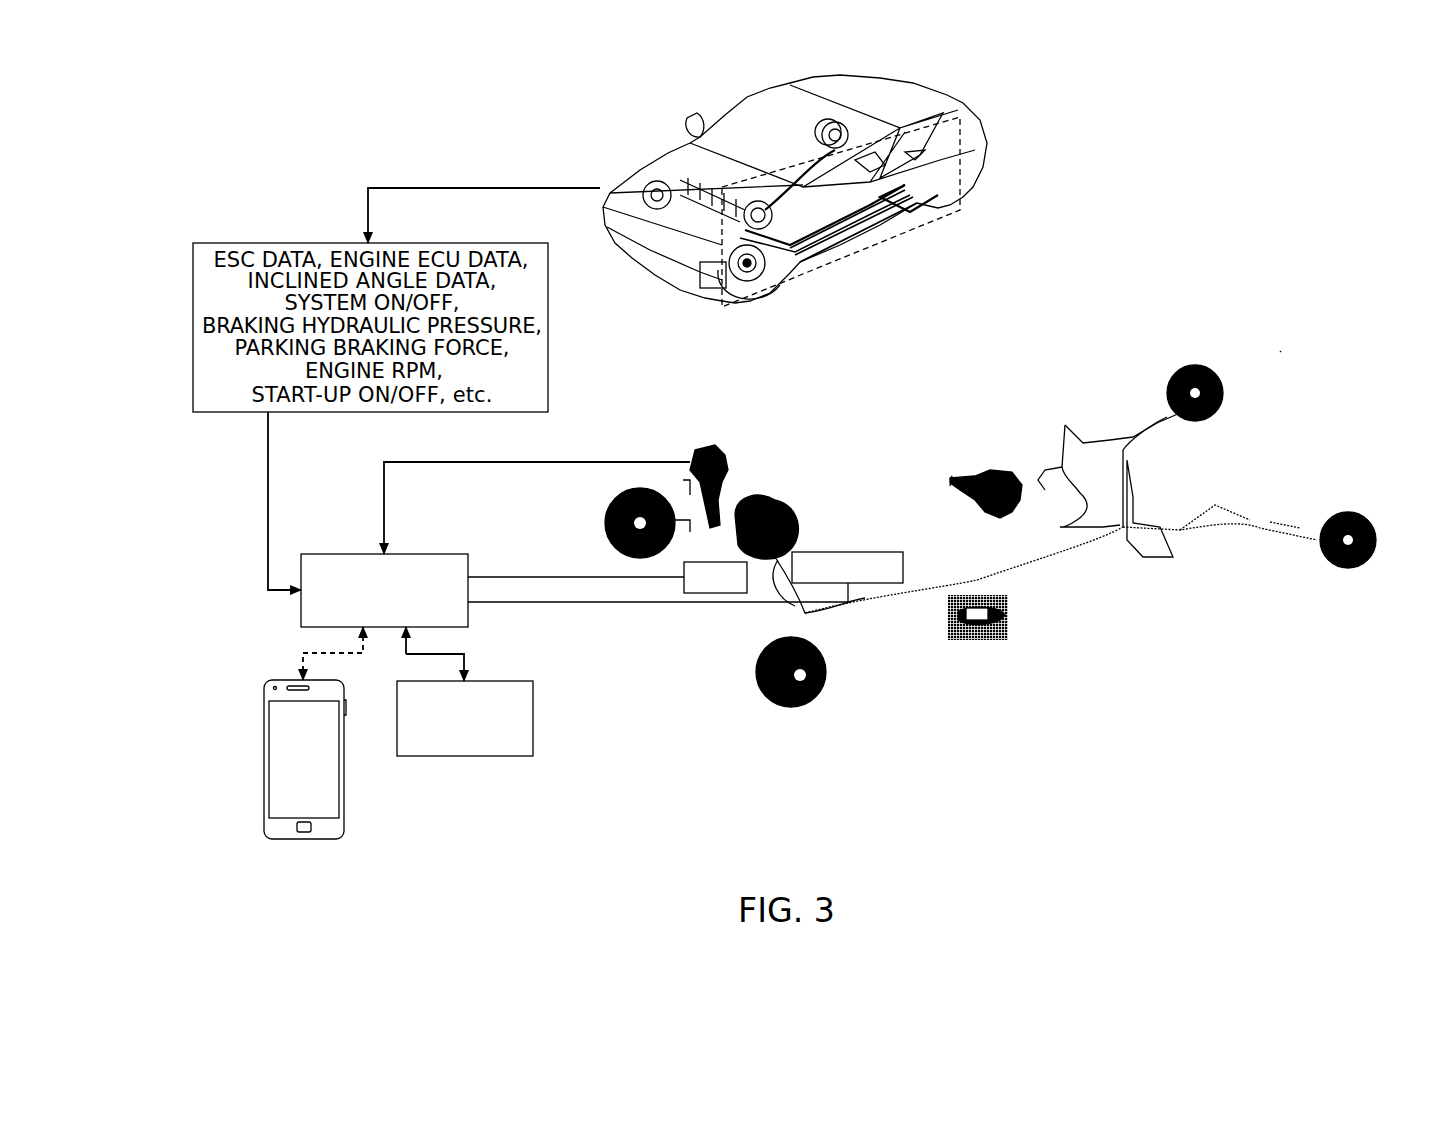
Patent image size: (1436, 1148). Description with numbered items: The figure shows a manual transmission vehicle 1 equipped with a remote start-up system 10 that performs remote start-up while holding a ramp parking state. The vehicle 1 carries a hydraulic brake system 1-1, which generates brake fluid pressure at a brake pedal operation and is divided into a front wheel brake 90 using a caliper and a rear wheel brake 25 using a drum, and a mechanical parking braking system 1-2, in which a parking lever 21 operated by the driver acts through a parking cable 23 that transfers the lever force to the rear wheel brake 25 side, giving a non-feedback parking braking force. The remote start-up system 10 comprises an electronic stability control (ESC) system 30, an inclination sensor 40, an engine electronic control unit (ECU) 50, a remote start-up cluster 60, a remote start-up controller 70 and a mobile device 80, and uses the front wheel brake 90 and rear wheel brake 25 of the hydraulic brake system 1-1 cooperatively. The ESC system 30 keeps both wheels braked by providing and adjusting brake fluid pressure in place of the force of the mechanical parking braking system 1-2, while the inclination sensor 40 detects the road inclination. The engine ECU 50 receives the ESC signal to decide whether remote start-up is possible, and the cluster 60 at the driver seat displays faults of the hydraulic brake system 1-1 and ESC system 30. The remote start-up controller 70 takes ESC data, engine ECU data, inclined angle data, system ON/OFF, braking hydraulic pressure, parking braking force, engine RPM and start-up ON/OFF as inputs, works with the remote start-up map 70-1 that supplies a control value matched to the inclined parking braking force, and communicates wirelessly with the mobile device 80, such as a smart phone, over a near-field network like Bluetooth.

The manual transmission vehicle 1 is at (947, 103).
The hydraulic brake system 1-1 is at (900, 233).
The mechanical parking braking system 1-2 is at (1028, 366).
The remote start-up system 10 is at (670, 157).
The parking lever 21 is at (993, 470).
The parking cable 23 is at (1053, 525).
The rear wheel brake 25 is at (1212, 407).
The electronic stability control (ESC) system 30 is at (697, 450).
The inclination sensor 40 is at (1000, 640).
The engine electronic control unit (ECU) 50 is at (699, 593).
The remote start-up cluster 60 is at (880, 583).
The remote start-up controller 70 is at (437, 554).
The remote start-up map 70-1 is at (465, 756).
The mobile device 80 is at (290, 680).
The front wheel brake 90 is at (765, 680).